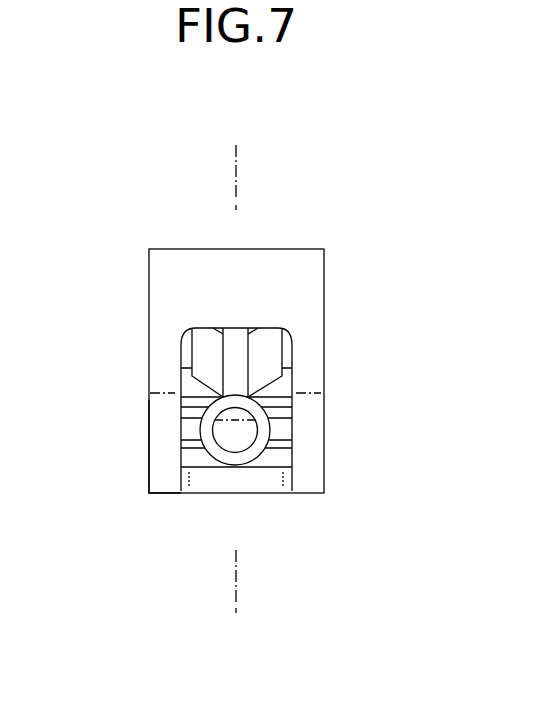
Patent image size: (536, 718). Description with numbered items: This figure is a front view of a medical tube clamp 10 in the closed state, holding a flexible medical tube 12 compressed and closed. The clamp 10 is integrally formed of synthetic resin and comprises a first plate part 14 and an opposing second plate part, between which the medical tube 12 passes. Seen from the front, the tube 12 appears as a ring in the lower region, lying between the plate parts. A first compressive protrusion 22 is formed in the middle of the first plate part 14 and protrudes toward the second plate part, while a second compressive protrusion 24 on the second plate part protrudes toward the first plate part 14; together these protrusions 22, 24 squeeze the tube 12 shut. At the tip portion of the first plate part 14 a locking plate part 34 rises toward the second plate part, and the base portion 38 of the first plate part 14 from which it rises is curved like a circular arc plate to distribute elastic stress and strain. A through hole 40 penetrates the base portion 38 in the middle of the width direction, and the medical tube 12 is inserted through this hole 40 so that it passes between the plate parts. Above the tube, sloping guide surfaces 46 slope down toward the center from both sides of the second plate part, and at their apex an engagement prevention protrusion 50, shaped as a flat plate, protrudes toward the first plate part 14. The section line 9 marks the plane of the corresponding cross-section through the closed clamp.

The section line 9- 9 is at (190, 568).
The medical tube clamp 10 is at (312, 227).
The medical tube 12 is at (247, 453).
The first plate part 14 is at (215, 482).
The first compressive protrusion 22 is at (192, 430).
The second compressive protrusion 24 is at (277, 400).
The locking plate part 34 is at (173, 303).
The base portion 38 is at (165, 452).
The through hole 40 is at (203, 335).
The sloping guide surfaces 46 is at (205, 356).
The engagement prevention protrusion 50 is at (235, 352).